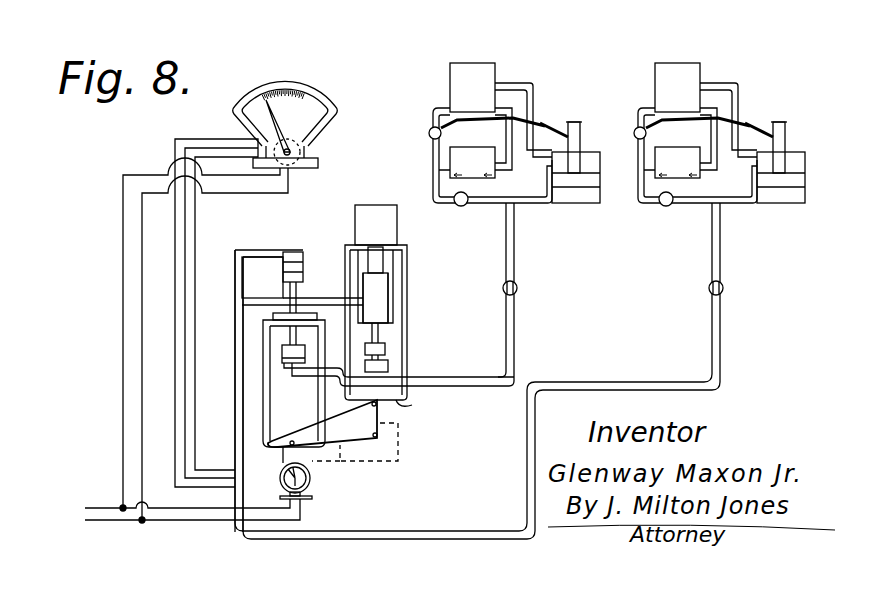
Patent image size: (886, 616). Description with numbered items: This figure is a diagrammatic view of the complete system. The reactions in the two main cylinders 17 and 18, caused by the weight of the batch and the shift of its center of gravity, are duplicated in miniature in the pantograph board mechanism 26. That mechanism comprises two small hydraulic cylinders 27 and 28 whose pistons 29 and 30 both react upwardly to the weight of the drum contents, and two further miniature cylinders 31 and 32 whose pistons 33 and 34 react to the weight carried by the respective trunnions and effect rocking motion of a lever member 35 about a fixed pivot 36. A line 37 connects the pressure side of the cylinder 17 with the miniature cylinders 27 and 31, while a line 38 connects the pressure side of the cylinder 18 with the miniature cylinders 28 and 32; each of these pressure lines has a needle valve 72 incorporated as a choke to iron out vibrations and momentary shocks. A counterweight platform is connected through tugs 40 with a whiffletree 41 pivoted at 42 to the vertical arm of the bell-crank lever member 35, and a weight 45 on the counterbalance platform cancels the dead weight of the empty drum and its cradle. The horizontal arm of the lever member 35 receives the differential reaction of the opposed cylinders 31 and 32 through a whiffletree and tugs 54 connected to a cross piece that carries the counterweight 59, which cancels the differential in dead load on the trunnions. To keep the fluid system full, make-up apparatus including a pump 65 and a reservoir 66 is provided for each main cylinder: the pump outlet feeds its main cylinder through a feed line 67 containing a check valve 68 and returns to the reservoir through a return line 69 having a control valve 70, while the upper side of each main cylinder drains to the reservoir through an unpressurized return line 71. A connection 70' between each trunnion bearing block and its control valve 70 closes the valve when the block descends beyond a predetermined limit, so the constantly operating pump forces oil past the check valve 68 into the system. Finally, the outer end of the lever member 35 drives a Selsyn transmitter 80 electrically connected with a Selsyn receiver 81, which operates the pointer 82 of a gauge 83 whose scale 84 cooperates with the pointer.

The cylinder 17 is at (582, 184).
The cylinder 18 is at (772, 184).
The pantograph board mechanism 26 is at (341, 229).
The small hydraulic cylinder 27 is at (393, 370).
The small hydraulic cylinder 28 is at (387, 298).
The piston 29 is at (383, 343).
The piston 30 is at (377, 267).
The miniature cylinder 31 is at (278, 371).
The miniature cylinder 32 is at (277, 283).
The piston 33 is at (292, 363).
The piston 34 is at (292, 262).
The lever member 35 is at (345, 440).
The fixed pivot 36 is at (402, 441).
The line 37 is at (521, 335).
The line 38 is at (665, 386).
The tugs 40 is at (411, 320).
The whiffletree 41 is at (392, 404).
The pivot 42 is at (377, 401).
The weight 45 is at (370, 211).
The tugs 54 is at (256, 415).
The counterweight 59 is at (272, 314).
The pump 65 is at (495, 144).
The reservoir 66 is at (490, 46).
The feed line 67 is at (497, 206).
The check valve 68 is at (452, 204).
The return line 69 is at (433, 119).
The control valve 70 is at (520, 104).
The connection 70' is at (783, 103).
The return line 71 is at (540, 115).
The needle valve 72 is at (523, 290).
The Selsyn transmitter 80 is at (313, 486).
The Selsyn receiver 81 is at (305, 152).
The pointer 82 is at (272, 120).
The gauge 83 is at (340, 99).
The scale 84 is at (257, 103).